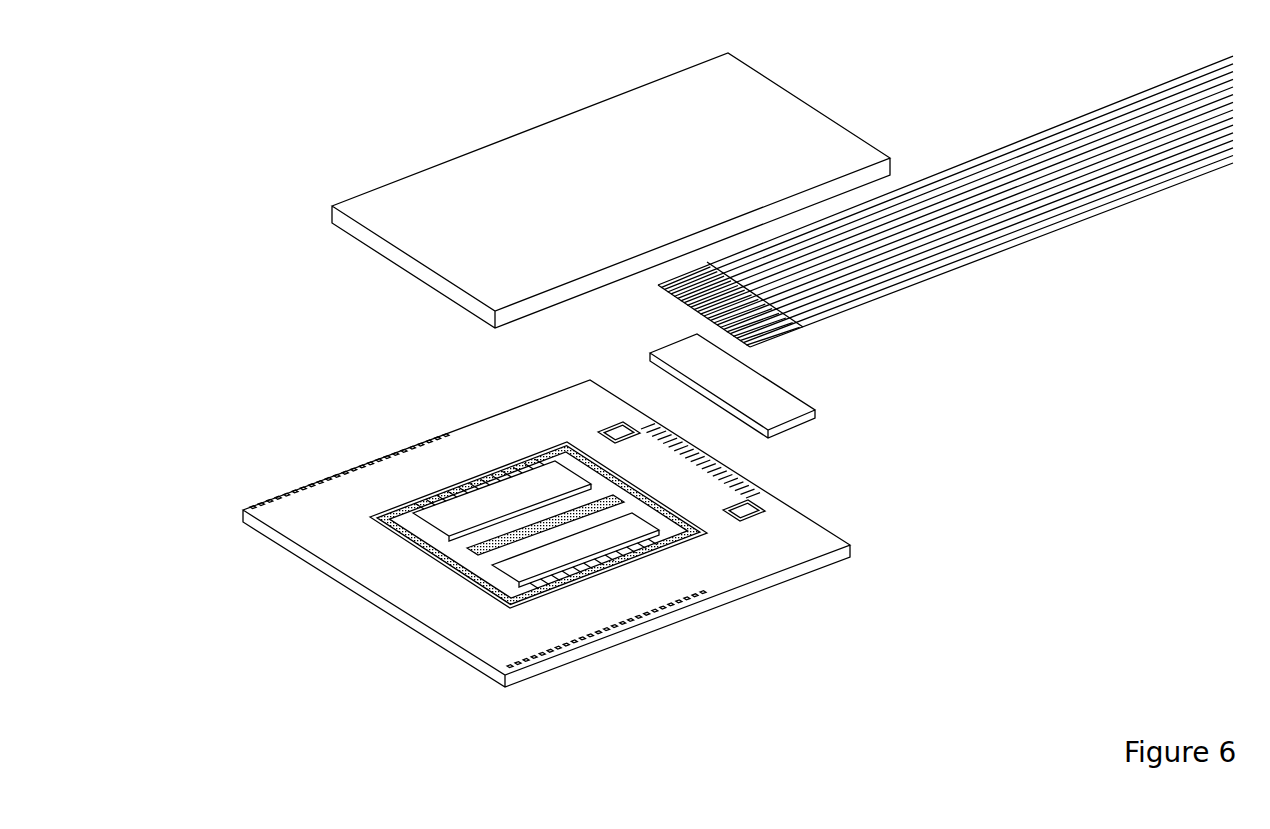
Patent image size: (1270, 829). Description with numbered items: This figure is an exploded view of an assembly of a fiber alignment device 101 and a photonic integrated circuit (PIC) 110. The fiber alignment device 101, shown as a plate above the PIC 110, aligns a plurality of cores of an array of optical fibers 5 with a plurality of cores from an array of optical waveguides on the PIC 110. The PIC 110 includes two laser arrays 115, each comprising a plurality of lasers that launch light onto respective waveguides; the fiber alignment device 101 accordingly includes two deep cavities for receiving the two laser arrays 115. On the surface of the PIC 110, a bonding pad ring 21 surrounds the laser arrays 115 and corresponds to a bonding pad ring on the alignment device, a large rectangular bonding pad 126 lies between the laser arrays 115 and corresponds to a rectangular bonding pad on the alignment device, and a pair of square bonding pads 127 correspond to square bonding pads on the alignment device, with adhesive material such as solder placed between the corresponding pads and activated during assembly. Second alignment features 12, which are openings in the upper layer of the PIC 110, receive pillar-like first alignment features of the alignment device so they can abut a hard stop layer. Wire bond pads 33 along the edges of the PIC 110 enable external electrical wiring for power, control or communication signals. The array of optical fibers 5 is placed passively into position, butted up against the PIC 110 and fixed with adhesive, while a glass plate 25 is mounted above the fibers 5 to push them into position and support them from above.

The fiber alignment device 101 is at (477, 205).
The optical fibers 5 is at (1036, 245).
The glass plate 25 is at (785, 397).
The photonic integrated circuit (PIC) 110 is at (823, 543).
The wire bond pads 33 is at (438, 435).
The second alignment features 12 is at (420, 508).
The bonding pad ring 21 is at (417, 540).
The laser arrays 115 is at (507, 502).
The rectangular bonding pad 126 is at (473, 557).
The square bonding pads 127 is at (613, 427).